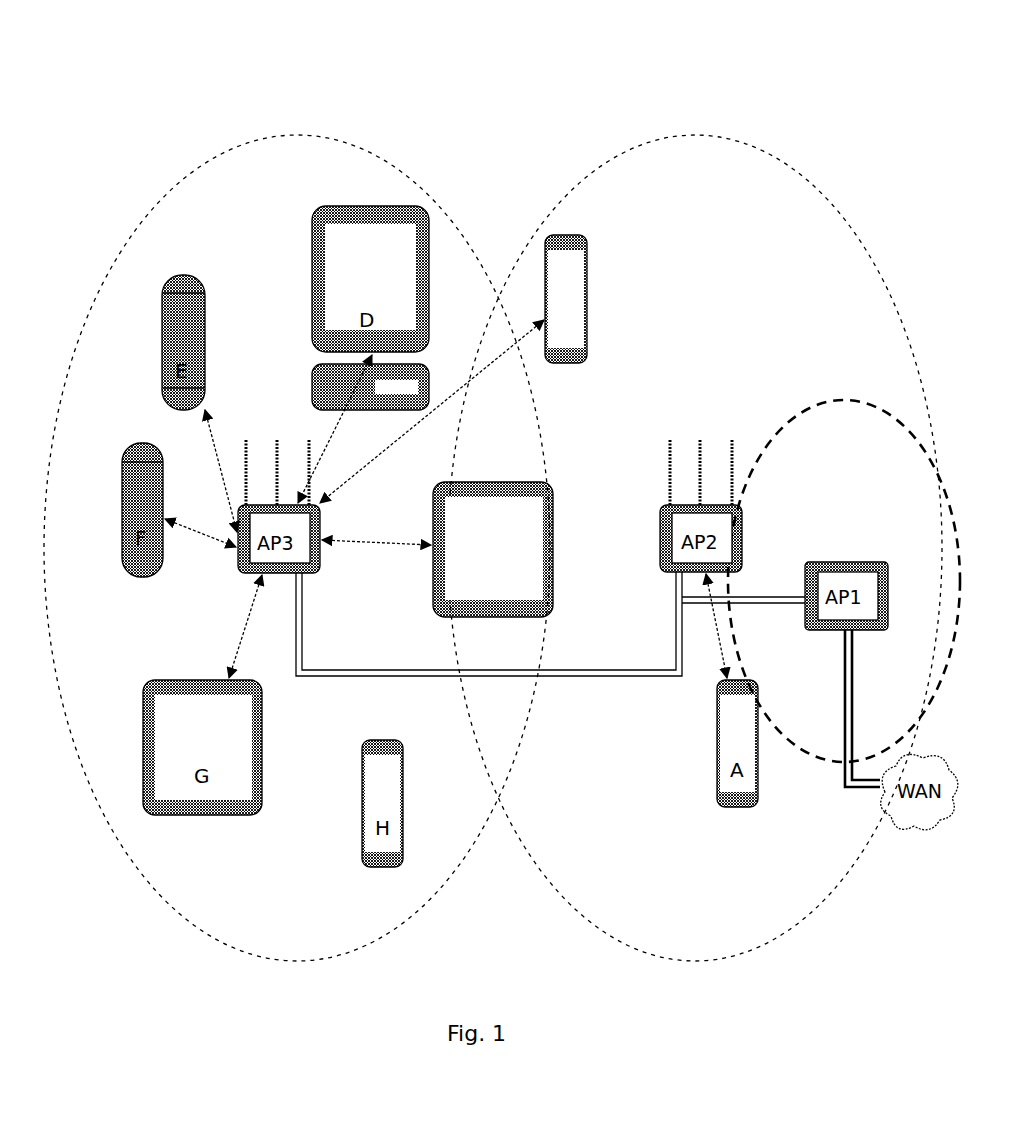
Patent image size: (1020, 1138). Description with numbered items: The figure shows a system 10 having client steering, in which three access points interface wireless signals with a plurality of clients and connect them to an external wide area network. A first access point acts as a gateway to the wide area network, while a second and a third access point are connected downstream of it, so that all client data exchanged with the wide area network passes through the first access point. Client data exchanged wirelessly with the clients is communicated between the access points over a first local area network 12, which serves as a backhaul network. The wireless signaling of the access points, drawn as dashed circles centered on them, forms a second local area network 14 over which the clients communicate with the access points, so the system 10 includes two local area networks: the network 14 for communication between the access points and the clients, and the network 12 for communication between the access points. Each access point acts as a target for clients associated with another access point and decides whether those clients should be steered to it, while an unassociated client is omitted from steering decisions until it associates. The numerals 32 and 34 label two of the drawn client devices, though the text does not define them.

The system 10 is at (493, 484).
The second local area network 14 is at (892, 221).
The station C (mobile device) 32 is at (585, 288).
The station B (device) 34 is at (553, 505).
The first local area network 12 is at (582, 668).